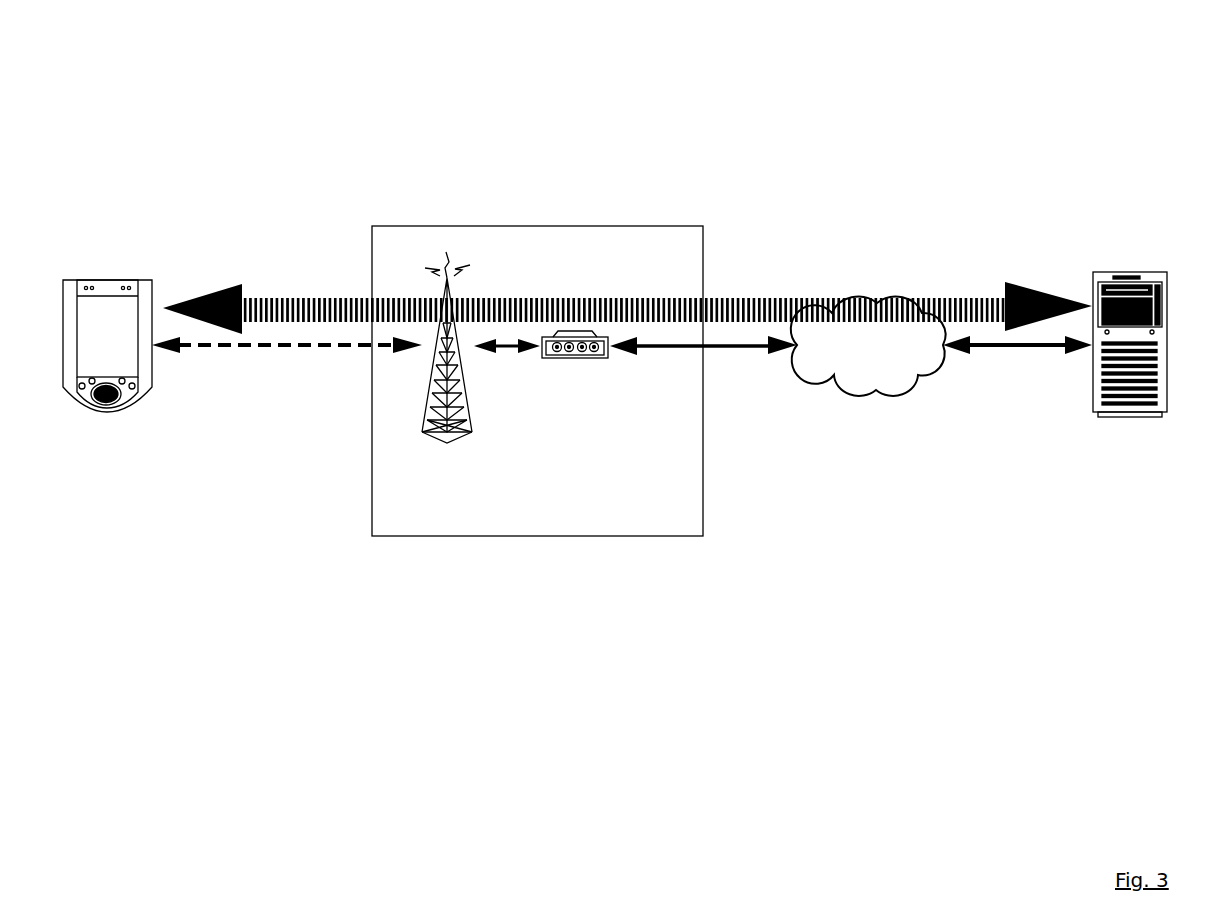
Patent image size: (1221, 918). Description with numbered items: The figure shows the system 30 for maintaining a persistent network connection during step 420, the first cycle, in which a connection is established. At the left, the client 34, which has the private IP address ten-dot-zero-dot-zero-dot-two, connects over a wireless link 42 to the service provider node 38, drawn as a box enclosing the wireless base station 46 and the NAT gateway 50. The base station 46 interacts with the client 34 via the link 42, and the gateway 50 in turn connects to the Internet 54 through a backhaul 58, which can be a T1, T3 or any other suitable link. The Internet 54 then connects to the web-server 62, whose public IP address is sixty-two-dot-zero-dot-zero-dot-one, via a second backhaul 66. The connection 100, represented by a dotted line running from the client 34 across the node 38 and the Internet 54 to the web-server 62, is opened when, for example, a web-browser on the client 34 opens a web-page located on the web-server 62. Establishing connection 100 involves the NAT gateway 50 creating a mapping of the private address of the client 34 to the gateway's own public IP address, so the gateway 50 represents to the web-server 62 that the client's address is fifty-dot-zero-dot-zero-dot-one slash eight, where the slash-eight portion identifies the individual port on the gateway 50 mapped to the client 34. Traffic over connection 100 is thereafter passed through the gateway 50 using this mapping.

The system for maintaining a persistent network connection 30 is at (981, 724).
The client 34 is at (111, 322).
The service provider node 38 is at (640, 543).
The wireless link 42 is at (276, 352).
The wireless base station 46 is at (473, 447).
The NAT gateway 50 is at (594, 375).
The Internet 54 is at (868, 346).
The backhaul 58 is at (745, 355).
The web-server 62 is at (1140, 438).
The second backhaul 66 is at (1005, 353).
The connection 100 is at (777, 289).
The step of establishing a connection 420 is at (1012, 101).